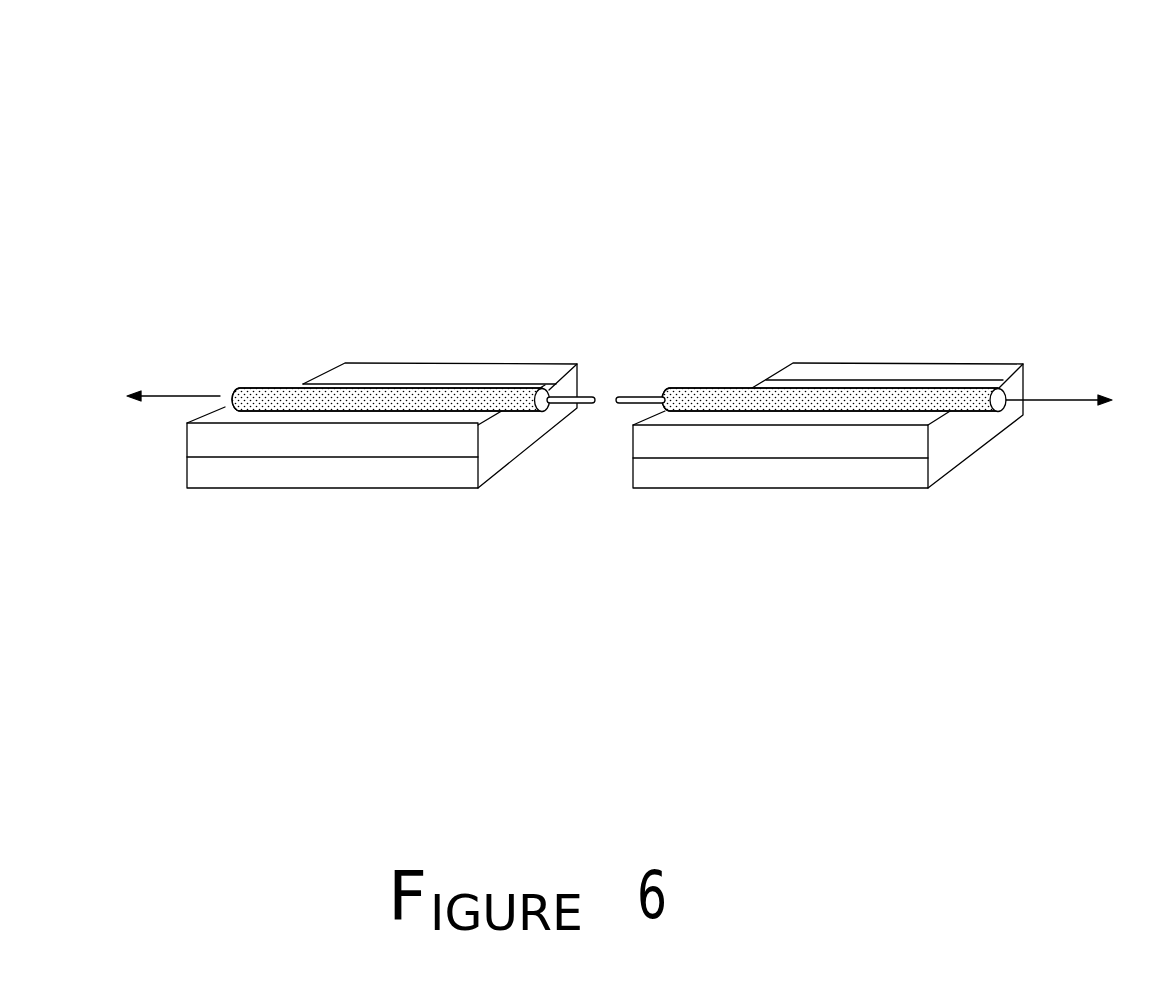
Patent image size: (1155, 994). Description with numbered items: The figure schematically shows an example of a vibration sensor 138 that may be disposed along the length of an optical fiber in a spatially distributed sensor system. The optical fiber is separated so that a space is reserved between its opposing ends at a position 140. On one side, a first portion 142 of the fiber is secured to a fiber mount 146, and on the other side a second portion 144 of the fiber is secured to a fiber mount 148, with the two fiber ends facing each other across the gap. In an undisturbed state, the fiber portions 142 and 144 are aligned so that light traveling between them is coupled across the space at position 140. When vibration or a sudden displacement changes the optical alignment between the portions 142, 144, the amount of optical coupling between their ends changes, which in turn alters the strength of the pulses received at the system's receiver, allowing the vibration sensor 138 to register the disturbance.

The vibration sensor 138 is at (880, 170).
The position 140 is at (612, 388).
The first portion 142 is at (270, 393).
The second portion 144 is at (715, 388).
The fiber mount 146 is at (498, 470).
The fiber mount 148 is at (950, 473).